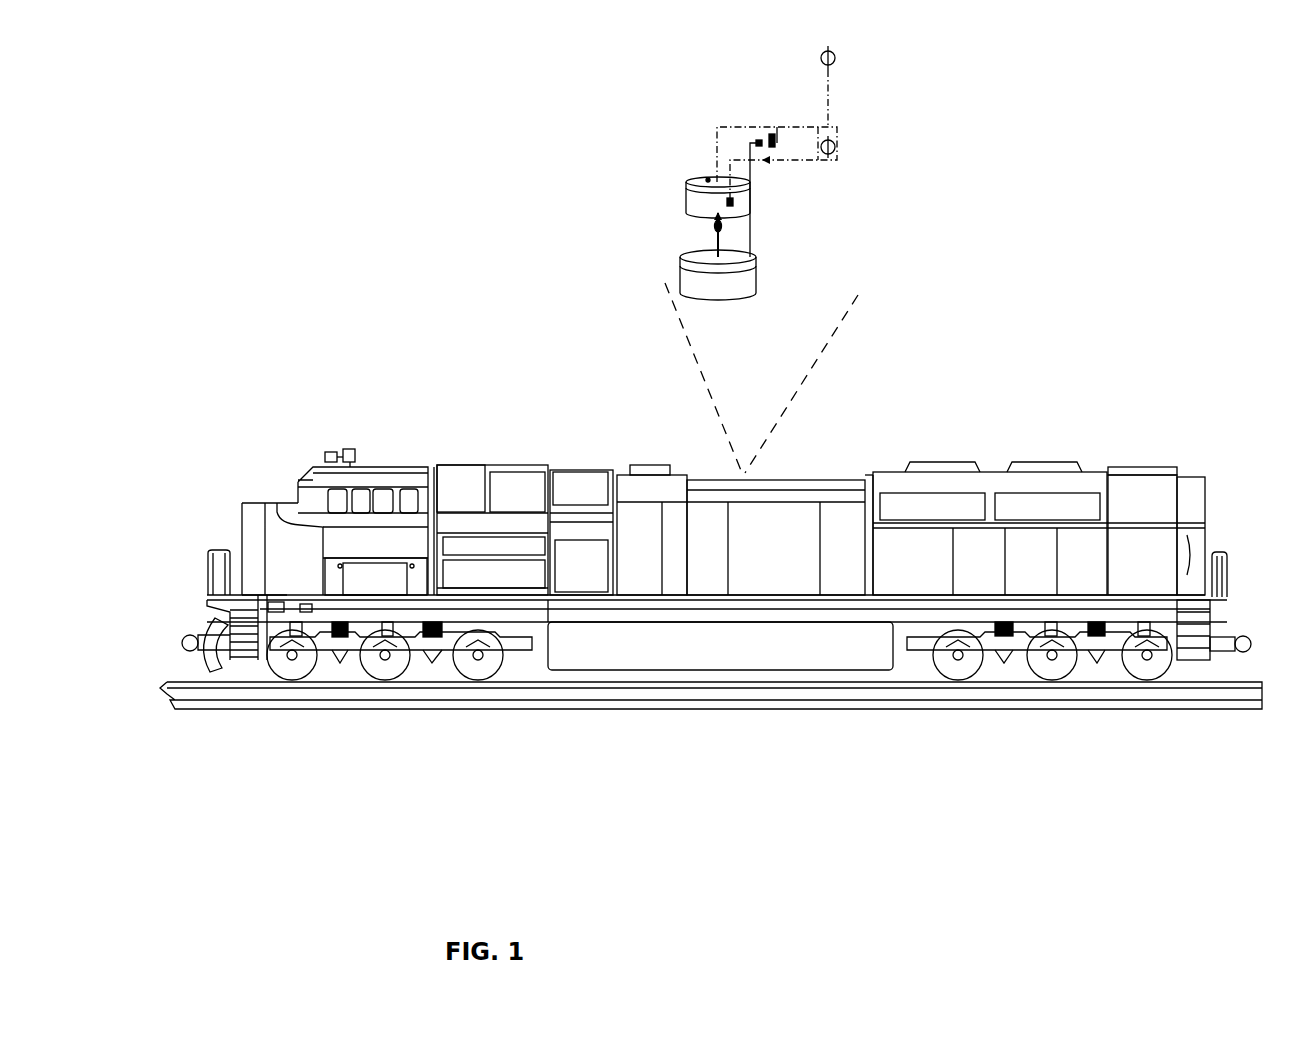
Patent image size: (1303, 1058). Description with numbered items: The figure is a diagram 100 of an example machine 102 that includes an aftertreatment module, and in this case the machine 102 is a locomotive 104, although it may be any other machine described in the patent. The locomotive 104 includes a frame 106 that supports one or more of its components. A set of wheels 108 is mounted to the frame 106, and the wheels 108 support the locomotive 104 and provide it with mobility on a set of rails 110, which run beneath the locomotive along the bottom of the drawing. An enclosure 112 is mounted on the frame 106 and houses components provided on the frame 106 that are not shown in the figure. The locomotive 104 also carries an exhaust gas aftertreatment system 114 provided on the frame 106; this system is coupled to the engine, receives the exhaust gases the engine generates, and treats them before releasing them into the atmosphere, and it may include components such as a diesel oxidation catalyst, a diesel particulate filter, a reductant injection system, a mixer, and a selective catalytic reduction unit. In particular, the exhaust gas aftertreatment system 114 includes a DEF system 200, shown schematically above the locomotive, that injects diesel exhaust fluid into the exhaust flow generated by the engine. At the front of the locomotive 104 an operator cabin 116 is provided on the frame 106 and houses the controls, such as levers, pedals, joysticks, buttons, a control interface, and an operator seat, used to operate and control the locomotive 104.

The diagram 100 is at (224, 160).
The DEF system 200 is at (624, 84).
The machine 102 is at (1038, 286).
The locomotive 104 is at (945, 388).
The frame 106 is at (583, 607).
The set of wheels 108 is at (287, 676).
The set of rails 110 is at (810, 709).
The enclosure 112 is at (707, 548).
The exhaust gas aftertreatment system 114 is at (803, 500).
The operator cabin 116 is at (380, 480).